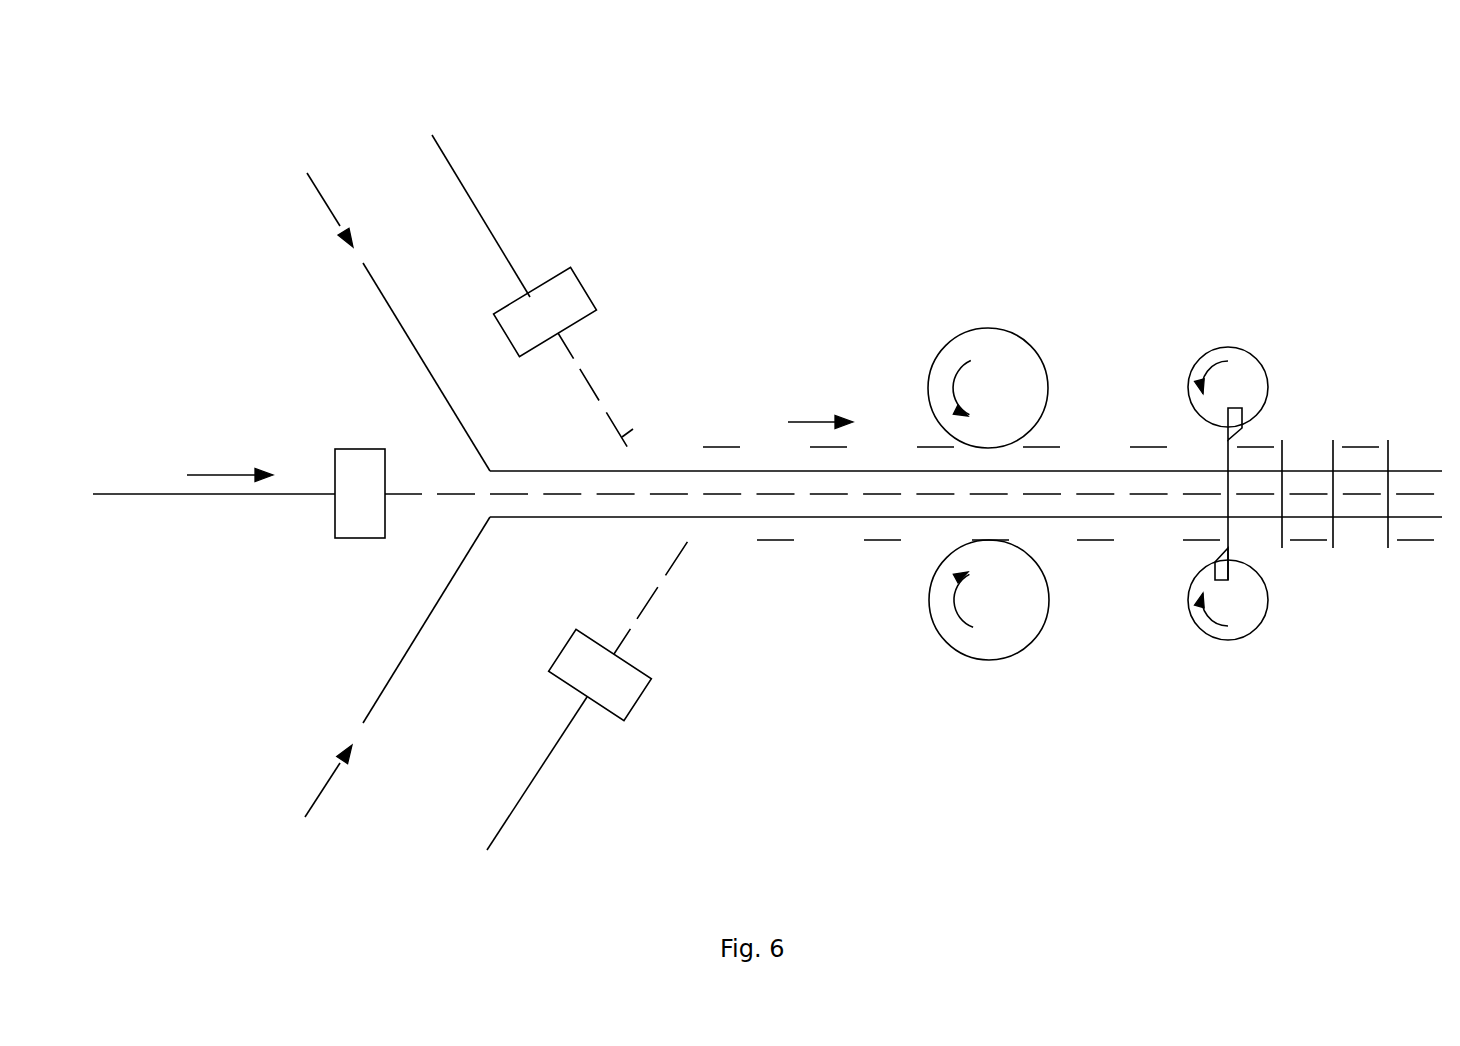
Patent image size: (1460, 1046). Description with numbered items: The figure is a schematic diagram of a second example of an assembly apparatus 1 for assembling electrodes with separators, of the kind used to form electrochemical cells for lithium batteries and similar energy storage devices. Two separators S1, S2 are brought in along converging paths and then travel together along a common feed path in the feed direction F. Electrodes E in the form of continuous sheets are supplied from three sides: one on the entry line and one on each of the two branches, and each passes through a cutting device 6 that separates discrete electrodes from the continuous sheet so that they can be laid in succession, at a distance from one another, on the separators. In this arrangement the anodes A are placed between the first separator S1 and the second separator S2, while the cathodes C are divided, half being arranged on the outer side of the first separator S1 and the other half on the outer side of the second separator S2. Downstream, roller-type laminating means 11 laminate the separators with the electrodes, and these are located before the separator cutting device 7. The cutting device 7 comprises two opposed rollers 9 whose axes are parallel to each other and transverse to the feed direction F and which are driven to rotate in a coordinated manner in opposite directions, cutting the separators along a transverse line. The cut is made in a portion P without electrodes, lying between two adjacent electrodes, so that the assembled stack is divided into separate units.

The assembly apparatus 1 is at (1222, 136).
The cutting device 6 is at (570, 293).
The cutting device 7 is at (1249, 330).
The opposed rollers 9 is at (1260, 385).
The laminating means 11 is at (1010, 350).
The electrode E is at (150, 493).
The first separator S1 is at (422, 637).
The second separator S2 is at (413, 340).
The anodes A is at (449, 492).
The cathodes C is at (635, 430).
The feed direction F is at (805, 420).
The portion P is at (1388, 470).